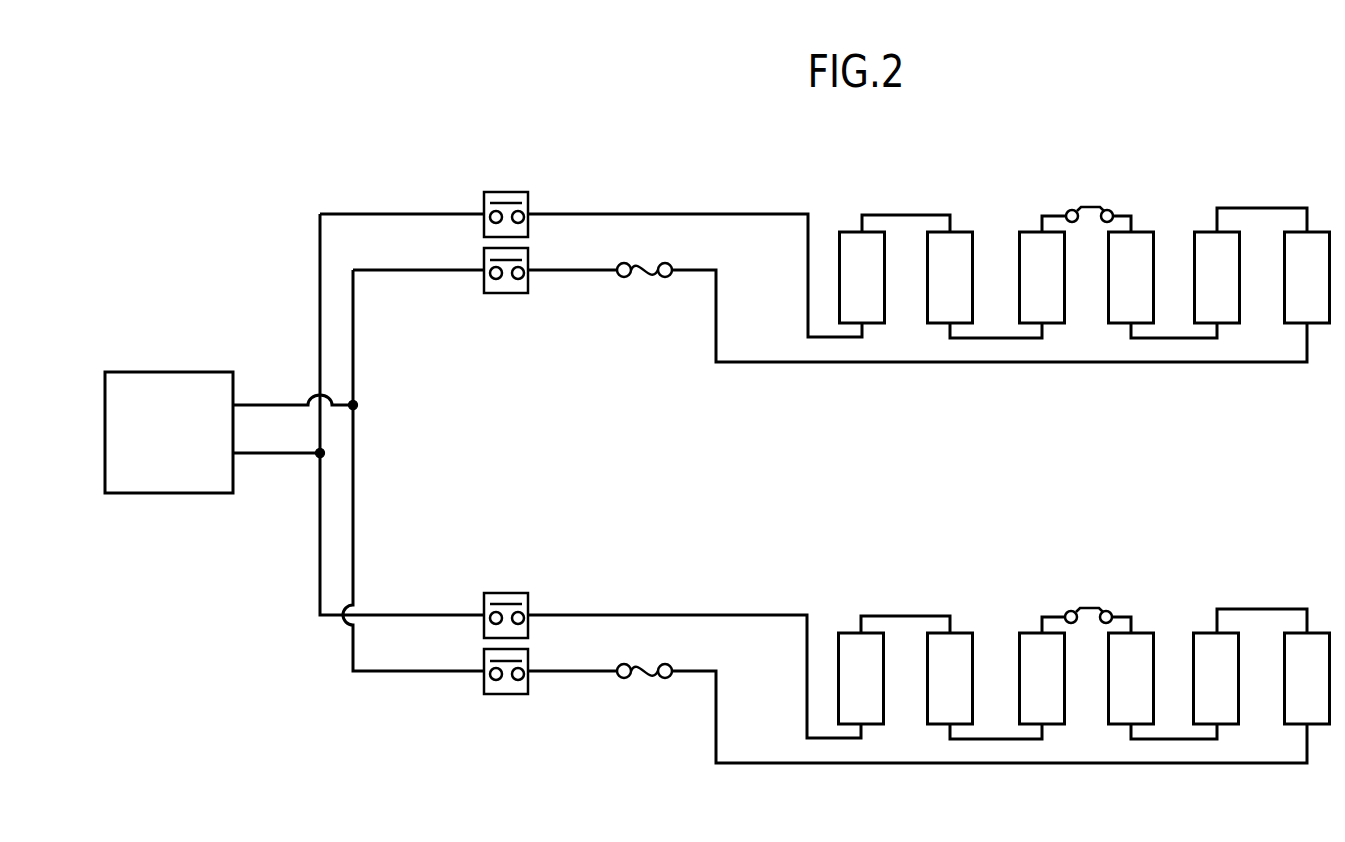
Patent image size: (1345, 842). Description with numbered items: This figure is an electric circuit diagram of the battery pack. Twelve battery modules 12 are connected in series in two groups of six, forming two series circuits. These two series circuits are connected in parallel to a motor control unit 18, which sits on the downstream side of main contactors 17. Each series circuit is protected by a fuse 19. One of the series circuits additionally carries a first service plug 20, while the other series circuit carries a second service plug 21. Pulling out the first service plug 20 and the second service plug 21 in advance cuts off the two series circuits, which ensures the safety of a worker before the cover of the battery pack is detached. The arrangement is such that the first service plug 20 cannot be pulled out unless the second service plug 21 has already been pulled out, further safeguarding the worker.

The battery module 12 is at (850, 291).
The main contactor 17 is at (484, 262).
The motor control unit 18 is at (153, 451).
The fuse 19 is at (644, 275).
The first service plug 20 is at (1088, 205).
The second service plug 21 is at (1082, 608).